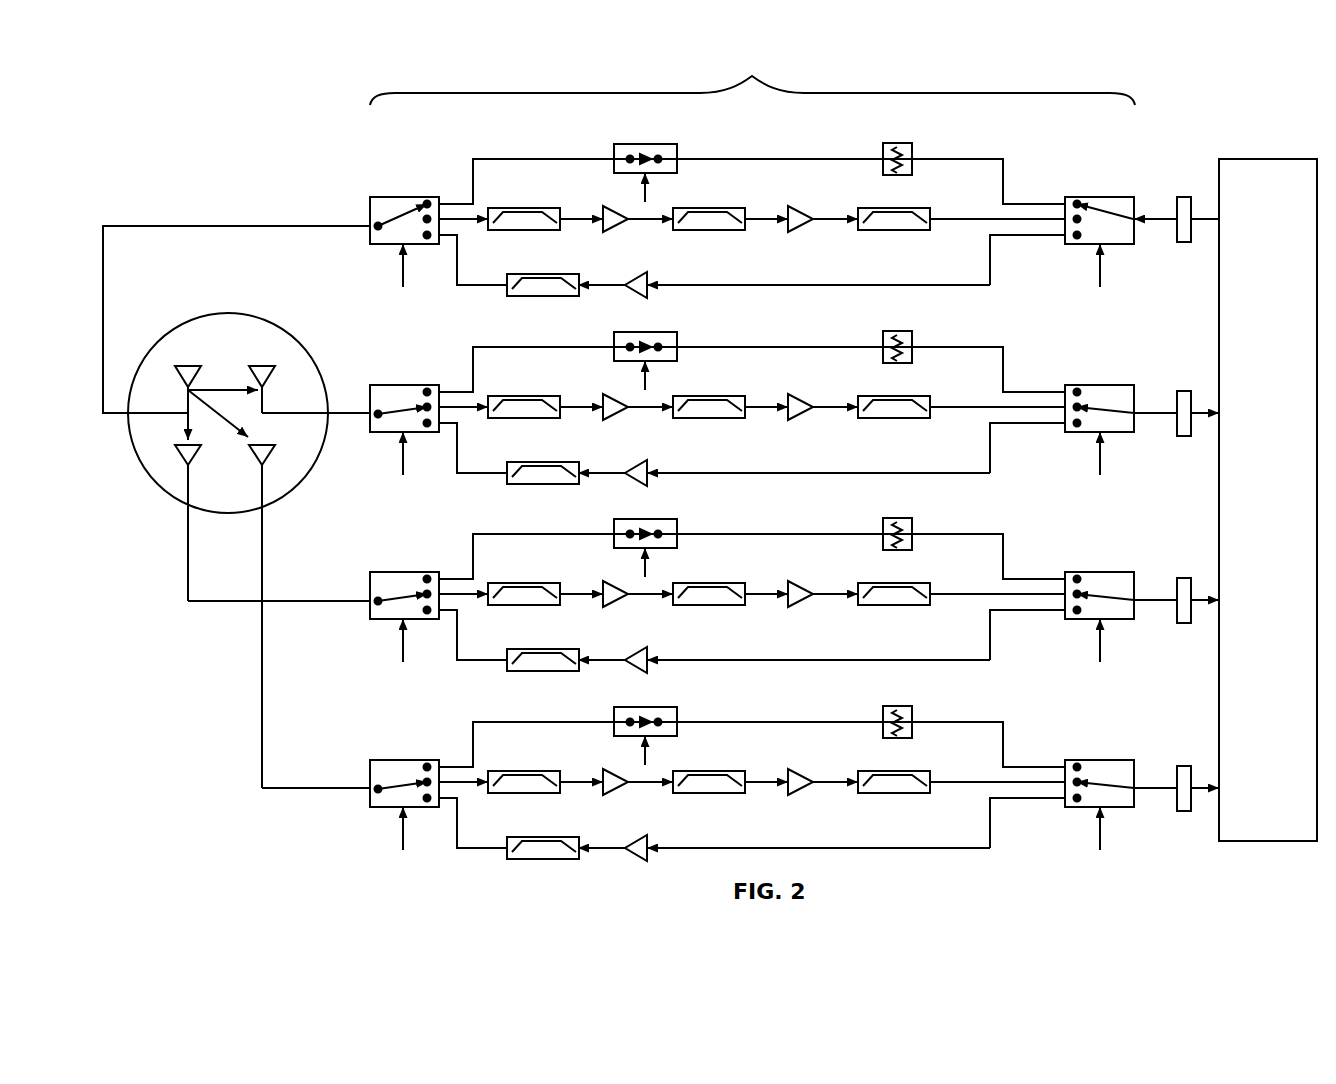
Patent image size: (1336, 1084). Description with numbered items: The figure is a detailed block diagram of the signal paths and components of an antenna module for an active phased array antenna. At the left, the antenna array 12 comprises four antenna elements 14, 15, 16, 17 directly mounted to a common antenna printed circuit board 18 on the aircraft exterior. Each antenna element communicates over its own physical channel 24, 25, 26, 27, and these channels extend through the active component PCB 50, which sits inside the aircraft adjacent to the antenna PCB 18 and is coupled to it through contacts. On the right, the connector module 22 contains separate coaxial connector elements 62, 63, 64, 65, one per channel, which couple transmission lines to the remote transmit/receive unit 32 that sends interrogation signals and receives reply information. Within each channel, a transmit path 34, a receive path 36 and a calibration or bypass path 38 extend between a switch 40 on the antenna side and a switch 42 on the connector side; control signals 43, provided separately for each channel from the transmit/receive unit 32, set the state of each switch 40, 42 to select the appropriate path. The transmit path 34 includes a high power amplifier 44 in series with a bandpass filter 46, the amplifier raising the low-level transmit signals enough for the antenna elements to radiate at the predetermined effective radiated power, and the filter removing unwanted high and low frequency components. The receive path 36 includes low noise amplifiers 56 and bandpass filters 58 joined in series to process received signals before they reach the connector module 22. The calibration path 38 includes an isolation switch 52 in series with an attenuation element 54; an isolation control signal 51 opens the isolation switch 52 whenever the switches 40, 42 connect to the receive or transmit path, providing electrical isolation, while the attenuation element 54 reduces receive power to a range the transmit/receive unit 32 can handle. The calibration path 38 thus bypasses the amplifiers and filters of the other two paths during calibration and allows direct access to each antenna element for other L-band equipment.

The antenna array 12 is at (216, 529).
The antenna element 14 is at (180, 378).
The antenna element 15 is at (270, 376).
The antenna element 16 is at (253, 456).
The antenna element 17 is at (178, 456).
The antenna printed circuit board 18 is at (228, 514).
The connector module 22 is at (1188, 842).
The channel 24 is at (152, 226).
The channel 25 is at (340, 413).
The channel 26 is at (323, 788).
The channel 27 is at (323, 600).
The transmit/receive unit 32 is at (1263, 127).
The transmit path 34 is at (752, 266).
The receive path 36 is at (752, 213).
The calibration path 38 is at (957, 159).
The switch 40 is at (402, 197).
The switch 42 is at (1100, 197).
The control signals 43 is at (403, 271).
The power amplifier 44 is at (637, 274).
The bandpass filter 46 is at (541, 274).
The active component PCB 50 is at (752, 78).
The isolation control signal 51 is at (642, 193).
The isolation switch 52 is at (658, 145).
The attenuation element 54 is at (897, 143).
The low noise amplifier 56 is at (616, 232).
The bandpass filter 58 is at (525, 209).
The coaxial connector element 62 is at (1185, 197).
The coaxial connector element 63 is at (1186, 391).
The coaxial connector element 64 is at (1186, 578).
The coaxial connector element 65 is at (1186, 766).